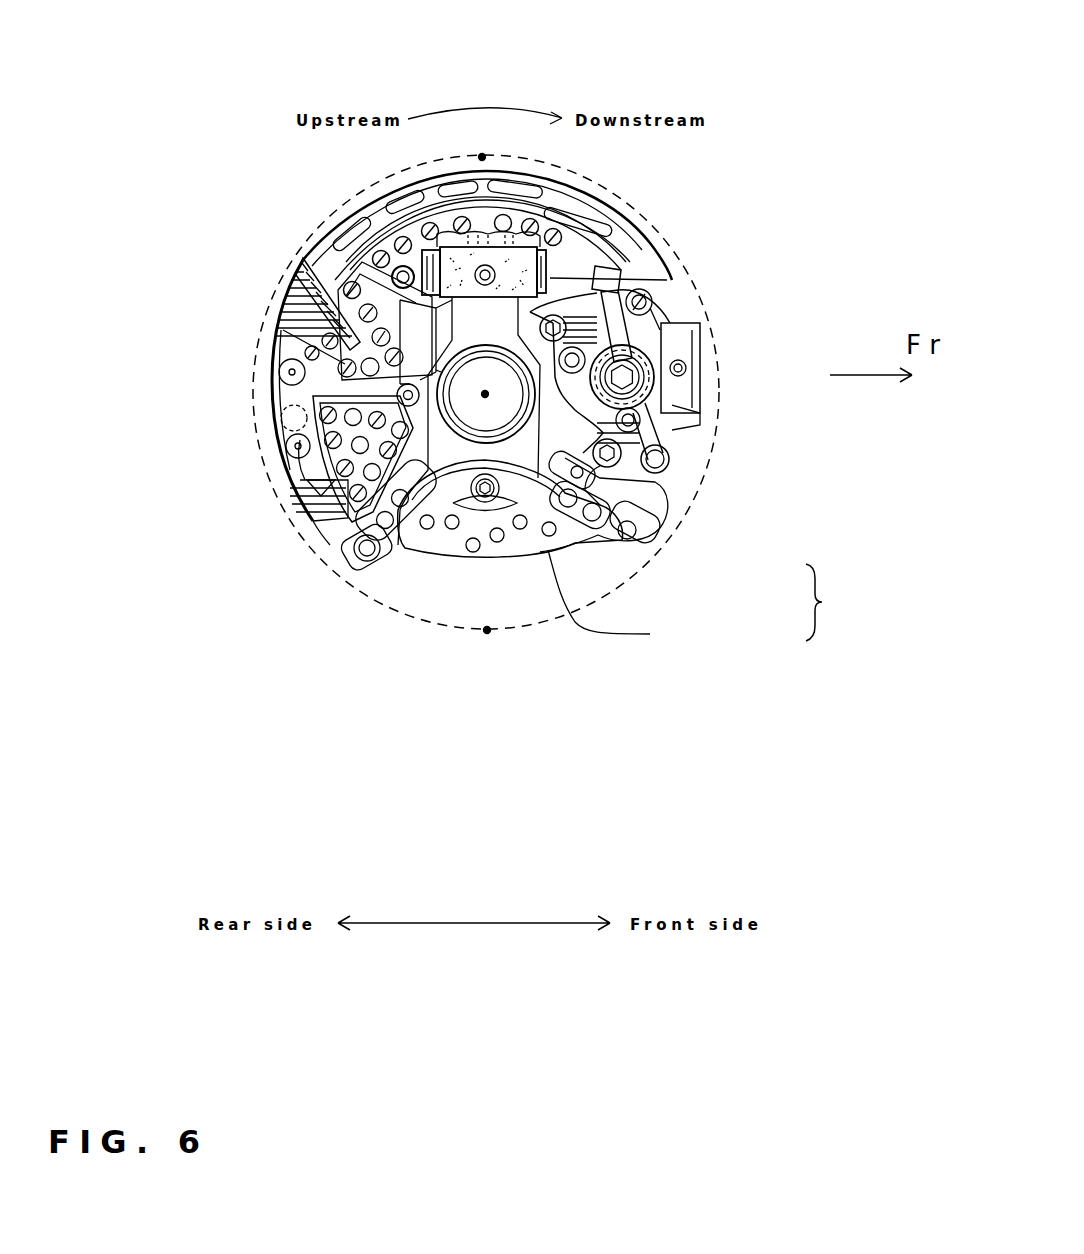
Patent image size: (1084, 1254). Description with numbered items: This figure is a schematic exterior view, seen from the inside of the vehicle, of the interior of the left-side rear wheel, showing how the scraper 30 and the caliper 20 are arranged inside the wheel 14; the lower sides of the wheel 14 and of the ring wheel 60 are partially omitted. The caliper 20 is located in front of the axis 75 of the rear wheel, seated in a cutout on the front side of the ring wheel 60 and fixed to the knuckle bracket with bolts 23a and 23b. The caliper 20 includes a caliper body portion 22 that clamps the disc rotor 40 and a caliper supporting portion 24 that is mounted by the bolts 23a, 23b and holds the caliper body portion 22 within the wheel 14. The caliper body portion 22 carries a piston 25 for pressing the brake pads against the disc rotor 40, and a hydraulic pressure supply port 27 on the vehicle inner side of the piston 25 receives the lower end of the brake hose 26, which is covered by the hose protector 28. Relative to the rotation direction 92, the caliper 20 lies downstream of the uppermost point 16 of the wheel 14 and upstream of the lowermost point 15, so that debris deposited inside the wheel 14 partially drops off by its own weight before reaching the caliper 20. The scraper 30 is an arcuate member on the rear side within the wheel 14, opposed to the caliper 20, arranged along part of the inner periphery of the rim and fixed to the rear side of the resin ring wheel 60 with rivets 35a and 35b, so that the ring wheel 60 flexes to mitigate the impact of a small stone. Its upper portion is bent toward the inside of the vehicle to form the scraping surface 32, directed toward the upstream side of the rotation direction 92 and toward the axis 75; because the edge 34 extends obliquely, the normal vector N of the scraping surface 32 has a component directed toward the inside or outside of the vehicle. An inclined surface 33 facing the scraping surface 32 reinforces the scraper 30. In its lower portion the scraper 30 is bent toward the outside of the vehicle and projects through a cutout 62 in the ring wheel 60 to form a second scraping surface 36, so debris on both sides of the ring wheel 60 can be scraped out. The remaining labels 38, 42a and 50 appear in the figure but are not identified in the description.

The wheel 14 is at (630, 156).
The lowermost point 15 is at (488, 632).
The uppermost point 16 is at (483, 155).
The caliper 20 is at (706, 422).
The caliper body portion 22 is at (682, 340).
The bolt 23a is at (652, 282).
The bolt 23b is at (672, 485).
The caliper supporting portion 24 is at (650, 483).
The piston 25 is at (700, 372).
The brake hose 26 is at (657, 296).
The hydraulic pressure supply port 27 is at (705, 398).
The hose protector 28 is at (612, 266).
The scraper 30 is at (281, 266).
The scraping surface 32 is at (296, 308).
The inclined surface 33 is at (311, 388).
The edge 34 is at (280, 372).
The rivet 35a is at (265, 388).
The rivet 35b is at (290, 455).
The scraping surface 36 is at (326, 528).
The lower end of air guide 38 is at (303, 517).
The disc rotor 40 is at (650, 634).
The cylinder 42a is at (545, 236).
The support unit 50 is at (834, 602).
The ring wheel 60 is at (455, 490).
The cutout 62 is at (340, 532).
The axis 75 is at (488, 397).
The rotation direction 92 is at (483, 114).
The normal vector N is at (285, 447).